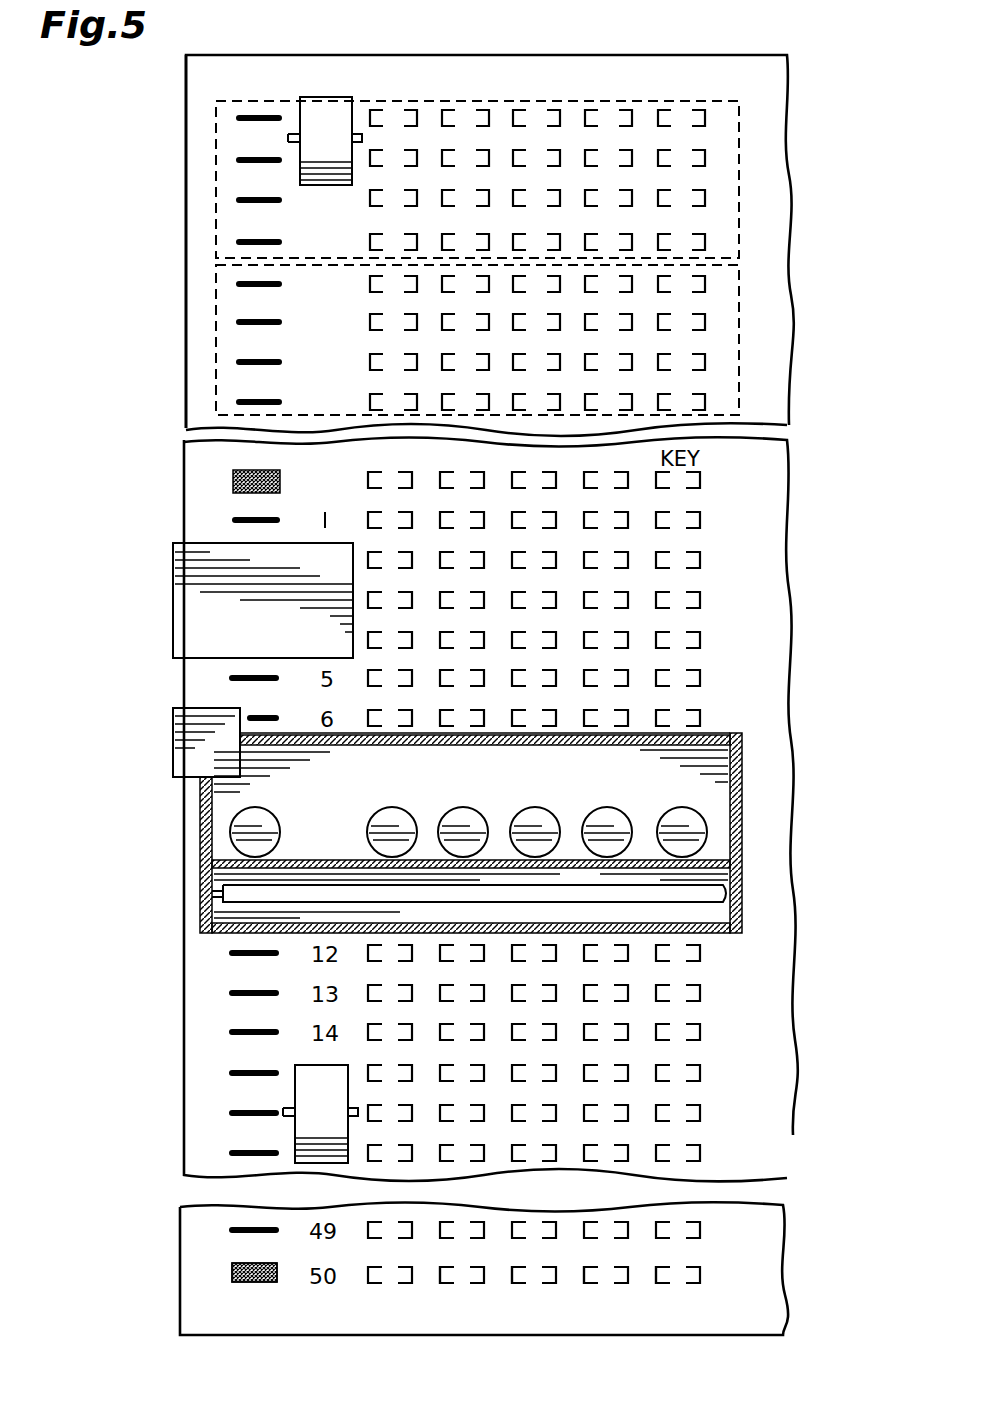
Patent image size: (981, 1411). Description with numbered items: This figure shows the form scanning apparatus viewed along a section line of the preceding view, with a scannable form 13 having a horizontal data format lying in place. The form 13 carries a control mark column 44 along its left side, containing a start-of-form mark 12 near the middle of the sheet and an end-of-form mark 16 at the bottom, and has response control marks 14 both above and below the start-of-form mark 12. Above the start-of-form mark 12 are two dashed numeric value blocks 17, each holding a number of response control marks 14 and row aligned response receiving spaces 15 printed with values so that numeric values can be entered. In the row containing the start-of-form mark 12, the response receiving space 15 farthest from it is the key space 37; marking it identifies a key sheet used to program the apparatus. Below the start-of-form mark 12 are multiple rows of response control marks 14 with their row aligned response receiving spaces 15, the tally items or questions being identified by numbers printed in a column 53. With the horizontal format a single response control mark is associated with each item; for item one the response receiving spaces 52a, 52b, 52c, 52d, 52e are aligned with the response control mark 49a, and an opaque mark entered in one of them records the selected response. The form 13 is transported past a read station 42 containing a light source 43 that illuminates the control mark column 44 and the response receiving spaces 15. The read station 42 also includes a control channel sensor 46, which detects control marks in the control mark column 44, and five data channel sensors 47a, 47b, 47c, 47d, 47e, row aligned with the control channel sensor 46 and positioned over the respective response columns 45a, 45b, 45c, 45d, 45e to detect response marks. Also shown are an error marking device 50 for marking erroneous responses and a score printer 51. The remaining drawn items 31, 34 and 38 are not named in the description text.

The start-of-form mark 12 is at (233, 482).
The scannable form 13 is at (148, 118).
The response control marks 14 is at (246, 362).
The response receiving spaces 15 is at (600, 90).
The end-of-form mark 16 is at (240, 1270).
The numeric value blocks 17 is at (213, 199).
The board frame 31 is at (760, 55).
The middle board panel 34 is at (182, 1095).
The key space 37 is at (705, 482).
The slider marker 38 is at (325, 118).
The read station 42 is at (757, 745).
The light source 43 is at (715, 893).
The control mark column 44 is at (248, 1290).
The response column 45a is at (370, 1290).
The response column 45b is at (447, 1290).
The response column 45c is at (530, 1290).
The response column 45d is at (597, 1290).
The response column 45e is at (675, 1290).
The control channel sensor 46 is at (253, 824).
The data channel sensor 47a is at (392, 822).
The data channel sensor 47b is at (465, 822).
The data channel sensor 47c is at (538, 822).
The data channel sensor 47d is at (608, 822).
The data channel sensor 47e is at (684, 822).
The response control mark 49a is at (237, 518).
The error marking device 50 is at (200, 745).
The score printer 51 is at (194, 601).
The response receiving space 52a is at (401, 515).
The response receiving space 52b is at (476, 515).
The response receiving space 52c is at (549, 515).
The response receiving space 52d is at (624, 512).
The response receiving space 52e is at (698, 524).
The column 53 is at (326, 505).